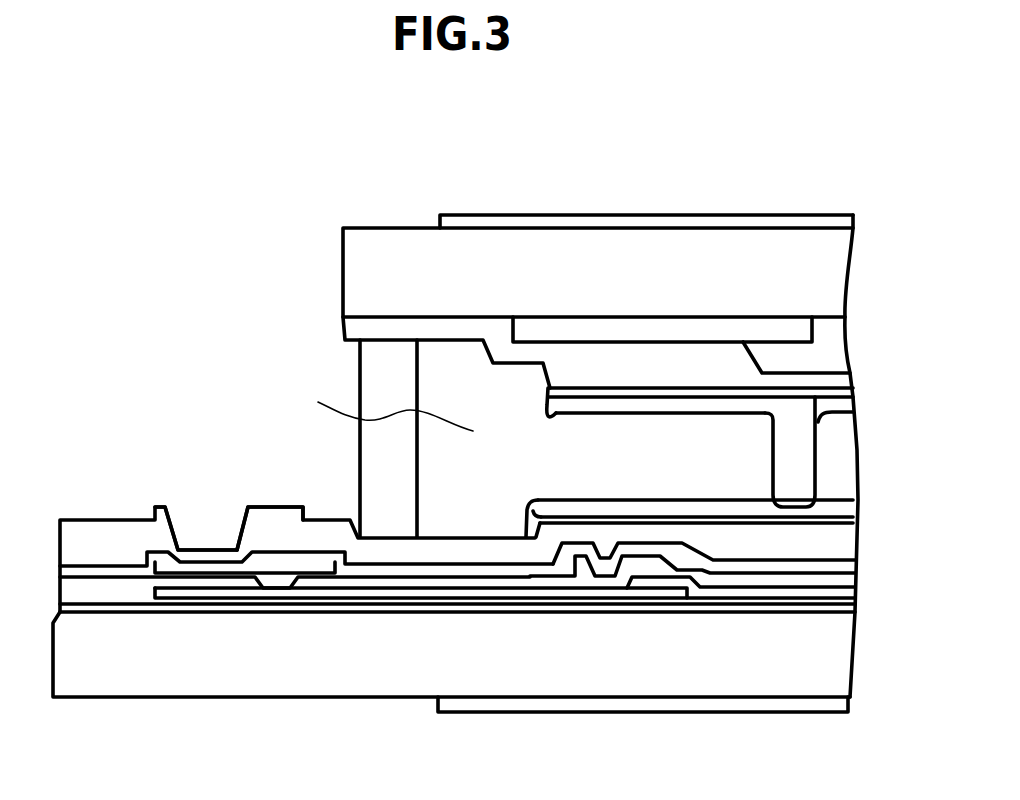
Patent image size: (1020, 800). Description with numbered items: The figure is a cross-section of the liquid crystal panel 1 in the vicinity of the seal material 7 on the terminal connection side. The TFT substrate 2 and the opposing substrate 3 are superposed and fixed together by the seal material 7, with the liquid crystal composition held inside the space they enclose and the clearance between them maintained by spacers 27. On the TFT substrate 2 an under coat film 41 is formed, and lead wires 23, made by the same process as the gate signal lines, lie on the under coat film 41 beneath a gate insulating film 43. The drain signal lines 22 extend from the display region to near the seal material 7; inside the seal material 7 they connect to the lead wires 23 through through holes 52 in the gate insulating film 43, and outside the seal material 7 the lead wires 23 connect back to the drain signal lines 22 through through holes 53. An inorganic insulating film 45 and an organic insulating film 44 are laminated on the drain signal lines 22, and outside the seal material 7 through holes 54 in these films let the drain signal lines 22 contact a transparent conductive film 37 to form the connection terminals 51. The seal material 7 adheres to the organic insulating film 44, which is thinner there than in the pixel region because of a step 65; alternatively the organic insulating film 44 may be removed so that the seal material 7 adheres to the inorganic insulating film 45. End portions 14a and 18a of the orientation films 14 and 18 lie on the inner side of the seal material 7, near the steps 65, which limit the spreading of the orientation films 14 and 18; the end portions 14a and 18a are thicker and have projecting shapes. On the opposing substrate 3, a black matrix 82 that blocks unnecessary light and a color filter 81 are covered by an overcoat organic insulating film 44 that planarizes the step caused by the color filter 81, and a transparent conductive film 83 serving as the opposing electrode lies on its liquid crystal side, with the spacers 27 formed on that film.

The liquid crystal panel 1 is at (515, 205).
The TFT substrate 2 is at (227, 667).
The opposing substrate 3 is at (378, 258).
The seal material 7 is at (383, 358).
The orientation film 14 is at (627, 407).
The end portion of orientation film 14a is at (543, 412).
The orientation film 18 is at (590, 512).
The end portion of orientation film 18a is at (530, 500).
The drain signal line 22 is at (167, 568).
The lead wire 23 is at (368, 595).
The spacer 27 is at (788, 458).
The transparent conductive film 37 is at (282, 510).
The under coat film 41 is at (307, 605).
The gate insulating film 43 is at (408, 582).
The organic insulating film 44 is at (83, 537).
The inorganic insulating film 45 is at (125, 567).
The connection terminal 51 is at (197, 528).
The through hole 52 is at (585, 582).
The through hole 53 is at (275, 578).
The through hole 54 is at (242, 525).
The step 65 is at (528, 500).
The color filter 81 is at (792, 360).
The black matrix 82 is at (693, 325).
The transparent conductive film 83 is at (598, 388).